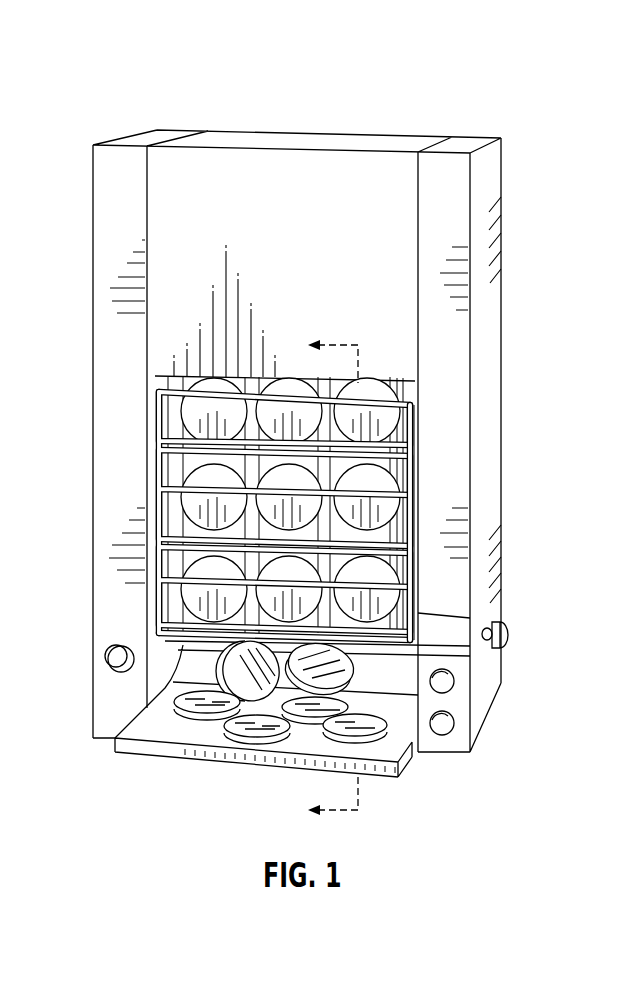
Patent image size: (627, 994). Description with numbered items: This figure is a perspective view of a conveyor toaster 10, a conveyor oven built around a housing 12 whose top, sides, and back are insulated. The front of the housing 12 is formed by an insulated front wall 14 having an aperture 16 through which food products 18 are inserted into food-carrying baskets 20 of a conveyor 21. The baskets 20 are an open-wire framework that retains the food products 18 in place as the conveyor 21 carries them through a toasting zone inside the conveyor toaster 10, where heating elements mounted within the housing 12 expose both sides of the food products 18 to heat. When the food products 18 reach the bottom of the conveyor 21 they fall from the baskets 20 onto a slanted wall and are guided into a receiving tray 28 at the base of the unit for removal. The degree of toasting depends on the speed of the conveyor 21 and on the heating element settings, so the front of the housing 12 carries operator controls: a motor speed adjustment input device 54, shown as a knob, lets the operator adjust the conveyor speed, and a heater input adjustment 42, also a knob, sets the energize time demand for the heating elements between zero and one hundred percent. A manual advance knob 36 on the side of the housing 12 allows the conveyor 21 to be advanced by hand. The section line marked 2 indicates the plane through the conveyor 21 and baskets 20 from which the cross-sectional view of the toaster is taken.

The conveyor toaster 10 is at (320, 414).
The housing 12 is at (93, 290).
The insulated front wall 14 is at (300, 242).
The aperture 16 is at (229, 488).
The food products 18 is at (165, 407).
The food-carrying baskets 20 is at (410, 437).
The conveyor 21 is at (424, 481).
The receiving tray 28 is at (163, 750).
The manual advance knob 36 is at (509, 640).
The heater input adjustment 42 is at (447, 684).
The motor speed adjustment input device 54 is at (108, 655).
The section line 2- 2 is at (325, 580).